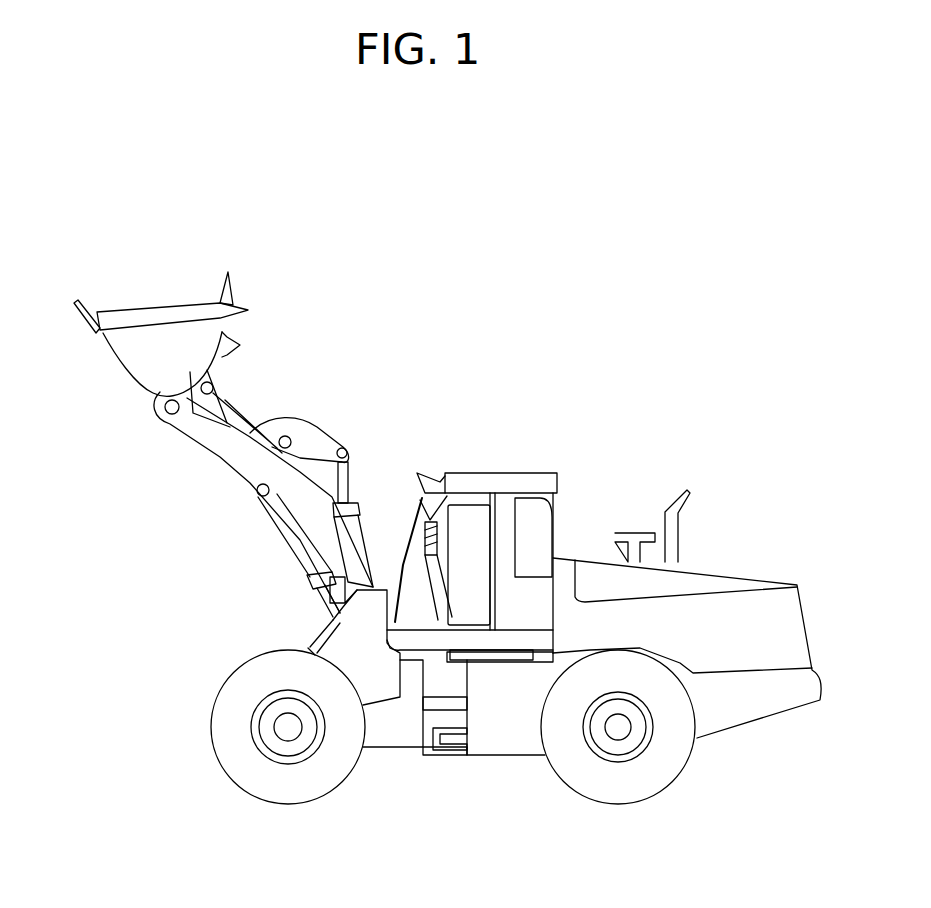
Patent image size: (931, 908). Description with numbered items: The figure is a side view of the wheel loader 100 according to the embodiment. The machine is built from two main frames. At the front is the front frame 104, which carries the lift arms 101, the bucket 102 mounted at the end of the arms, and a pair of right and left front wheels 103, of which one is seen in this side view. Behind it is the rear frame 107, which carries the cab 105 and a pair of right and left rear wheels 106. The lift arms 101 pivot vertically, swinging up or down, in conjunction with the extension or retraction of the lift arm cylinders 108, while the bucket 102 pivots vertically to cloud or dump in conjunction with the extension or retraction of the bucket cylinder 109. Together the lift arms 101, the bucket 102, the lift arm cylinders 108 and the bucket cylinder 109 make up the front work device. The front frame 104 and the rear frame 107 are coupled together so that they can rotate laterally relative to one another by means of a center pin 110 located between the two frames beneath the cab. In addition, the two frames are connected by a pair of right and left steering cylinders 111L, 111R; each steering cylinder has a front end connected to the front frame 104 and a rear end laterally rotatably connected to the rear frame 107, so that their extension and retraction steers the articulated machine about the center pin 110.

The wheel loader 100 is at (680, 380).
The lift arms 101 is at (227, 440).
The bucket 102 is at (125, 352).
The front wheels 103 is at (257, 780).
The front frame 104 is at (378, 735).
The cab 105 is at (505, 503).
The rear wheels 106 is at (628, 780).
The rear frame 107 is at (760, 712).
The lift arm cylinders 108 is at (292, 547).
The bucket cylinder 109 is at (352, 487).
The center pin 110 is at (453, 755).
The left steering cylinder 111L is at (420, 705).
The right steering cylinder 111R is at (450, 739).